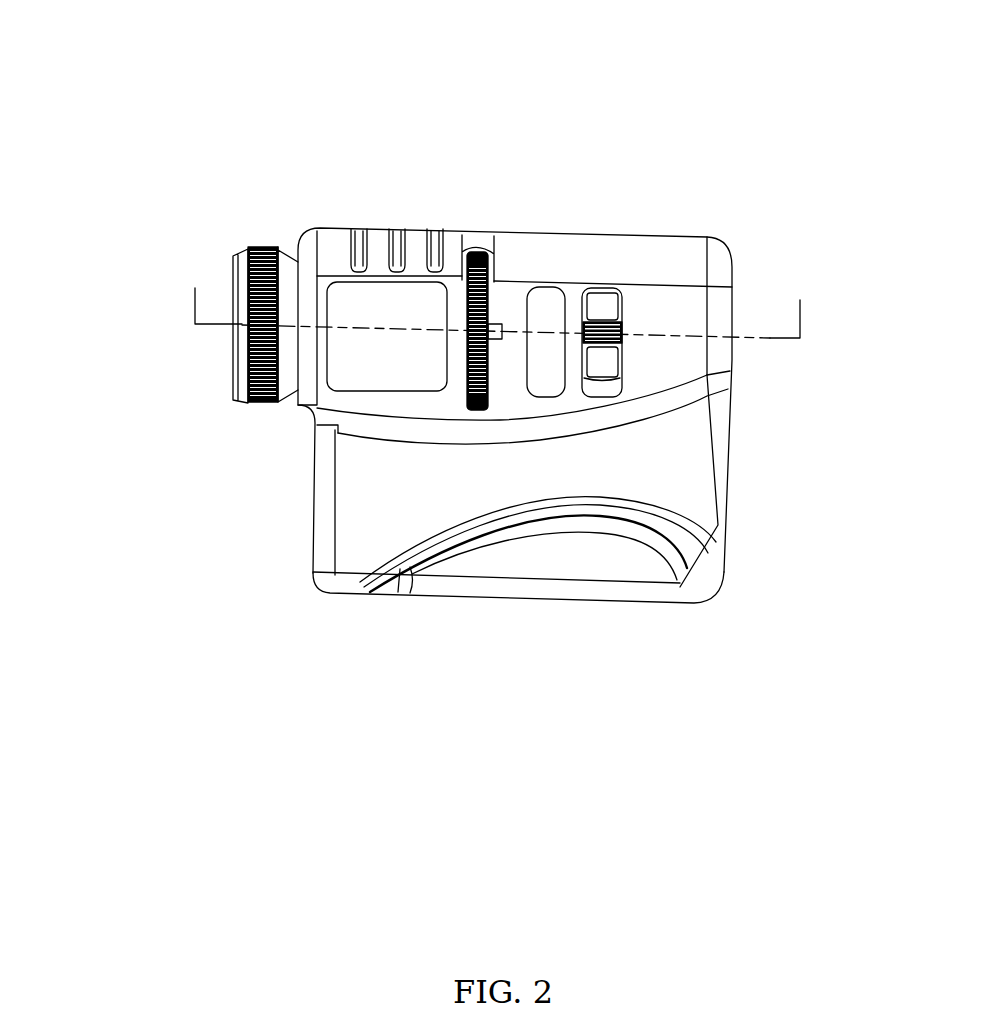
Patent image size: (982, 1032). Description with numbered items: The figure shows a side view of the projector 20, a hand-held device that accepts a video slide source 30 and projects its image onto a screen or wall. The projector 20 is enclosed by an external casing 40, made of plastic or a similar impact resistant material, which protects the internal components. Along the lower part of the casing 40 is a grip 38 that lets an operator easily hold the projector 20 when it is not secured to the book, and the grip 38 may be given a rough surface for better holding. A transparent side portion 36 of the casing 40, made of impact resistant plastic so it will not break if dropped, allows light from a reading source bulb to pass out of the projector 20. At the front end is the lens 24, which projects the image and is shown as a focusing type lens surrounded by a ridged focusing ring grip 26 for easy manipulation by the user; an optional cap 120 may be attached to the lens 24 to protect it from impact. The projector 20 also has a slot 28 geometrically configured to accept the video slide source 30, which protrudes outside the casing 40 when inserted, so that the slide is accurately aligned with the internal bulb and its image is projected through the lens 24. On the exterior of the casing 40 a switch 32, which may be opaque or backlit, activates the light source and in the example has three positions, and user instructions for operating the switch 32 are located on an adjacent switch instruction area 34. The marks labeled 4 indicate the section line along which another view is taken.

The projector 20 is at (847, 114).
The lens 24 is at (282, 253).
The focusing ring grip 26 is at (247, 253).
The slot 28 is at (473, 252).
The video slide source 30 is at (492, 255).
The switch 32 is at (607, 315).
The switch instruction area 34 is at (550, 311).
The transparent side portion 36 is at (693, 583).
The grip 38 is at (537, 560).
The external casing 40 is at (342, 513).
The cap 120 is at (233, 401).
The section line 4- 4 is at (499, 284).